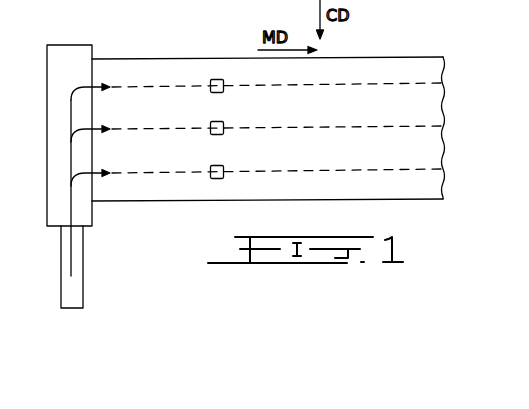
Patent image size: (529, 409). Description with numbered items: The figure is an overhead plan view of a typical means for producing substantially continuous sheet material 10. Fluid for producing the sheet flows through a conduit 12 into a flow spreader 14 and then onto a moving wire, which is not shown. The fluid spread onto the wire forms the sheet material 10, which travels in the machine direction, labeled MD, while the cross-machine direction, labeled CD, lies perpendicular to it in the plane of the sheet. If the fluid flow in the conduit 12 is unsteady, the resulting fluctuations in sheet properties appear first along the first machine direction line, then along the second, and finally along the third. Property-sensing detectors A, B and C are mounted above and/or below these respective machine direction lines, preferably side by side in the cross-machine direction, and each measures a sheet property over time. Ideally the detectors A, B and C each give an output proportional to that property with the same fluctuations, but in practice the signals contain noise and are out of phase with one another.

The sheet material 10 is at (183, 53).
The conduit 12 is at (75, 287).
The flow spreader 14 is at (82, 60).
The property-sensing detector A is at (220, 167).
The property-sensing detector B is at (222, 123).
The property-sensing detector C is at (222, 81).